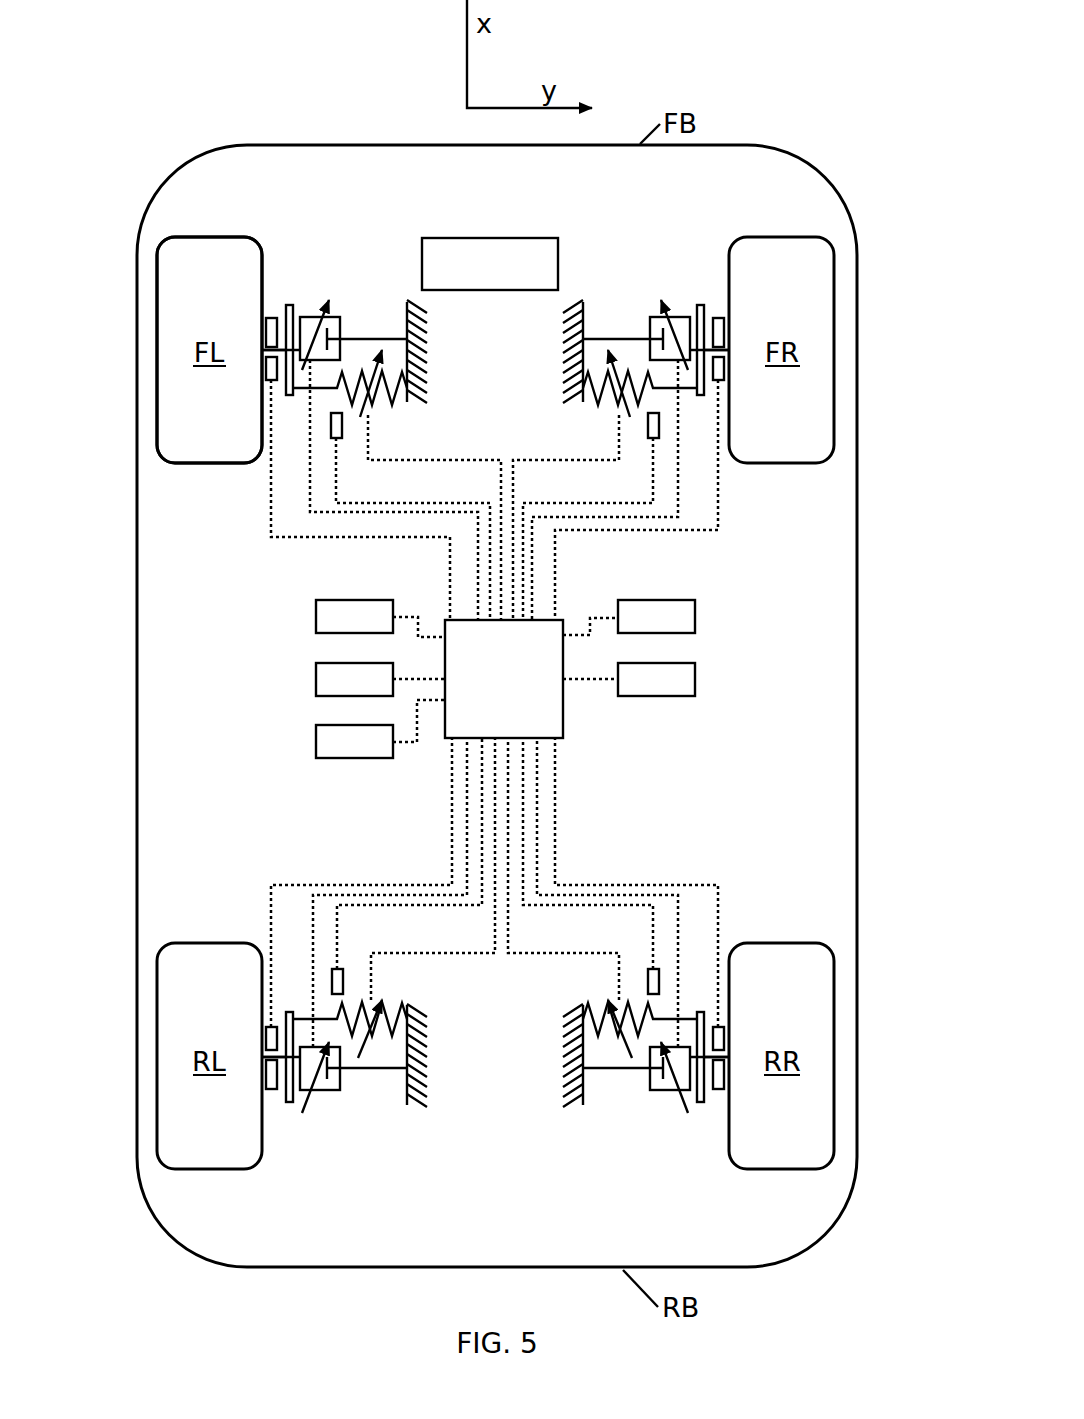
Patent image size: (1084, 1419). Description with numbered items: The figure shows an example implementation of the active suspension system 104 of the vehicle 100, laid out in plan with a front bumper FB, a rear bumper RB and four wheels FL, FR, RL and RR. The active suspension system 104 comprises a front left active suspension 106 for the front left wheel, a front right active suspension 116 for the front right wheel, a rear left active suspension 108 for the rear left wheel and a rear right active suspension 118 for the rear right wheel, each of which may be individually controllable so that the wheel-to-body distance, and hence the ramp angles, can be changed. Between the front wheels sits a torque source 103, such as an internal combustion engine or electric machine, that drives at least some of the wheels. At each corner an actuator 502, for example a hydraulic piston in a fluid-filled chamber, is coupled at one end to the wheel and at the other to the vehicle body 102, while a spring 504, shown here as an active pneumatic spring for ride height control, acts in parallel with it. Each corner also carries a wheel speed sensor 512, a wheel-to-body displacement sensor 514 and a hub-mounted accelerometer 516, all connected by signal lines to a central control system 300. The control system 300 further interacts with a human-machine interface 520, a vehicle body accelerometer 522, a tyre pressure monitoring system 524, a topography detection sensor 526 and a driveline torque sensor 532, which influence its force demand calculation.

The vehicle 100 is at (795, 159).
The vehicle body 102 is at (427, 353).
The torque source 103 is at (490, 236).
The active suspension system 104 is at (285, 110).
The front left active suspension 106 is at (335, 216).
The front right active suspension 116 is at (651, 216).
The rear left active suspension 108 is at (259, 908).
The rear right active suspension 118 is at (734, 908).
The control system 300 is at (562, 620).
The actuator 502 is at (310, 317).
The spring 504 is at (390, 408).
The wheel speed sensor 512 is at (269, 318).
The wheel-to-body displacement sensor 514 is at (338, 438).
The hub-mounted accelerometer 516 is at (263, 360).
The human-machine interface 520 is at (376, 630).
The vehicle body accelerometer 522 is at (376, 692).
The tyre pressure monitoring system 524 is at (376, 755).
The topography detection sensor 526 is at (678, 630).
The driveline torque sensor 532 is at (678, 692).